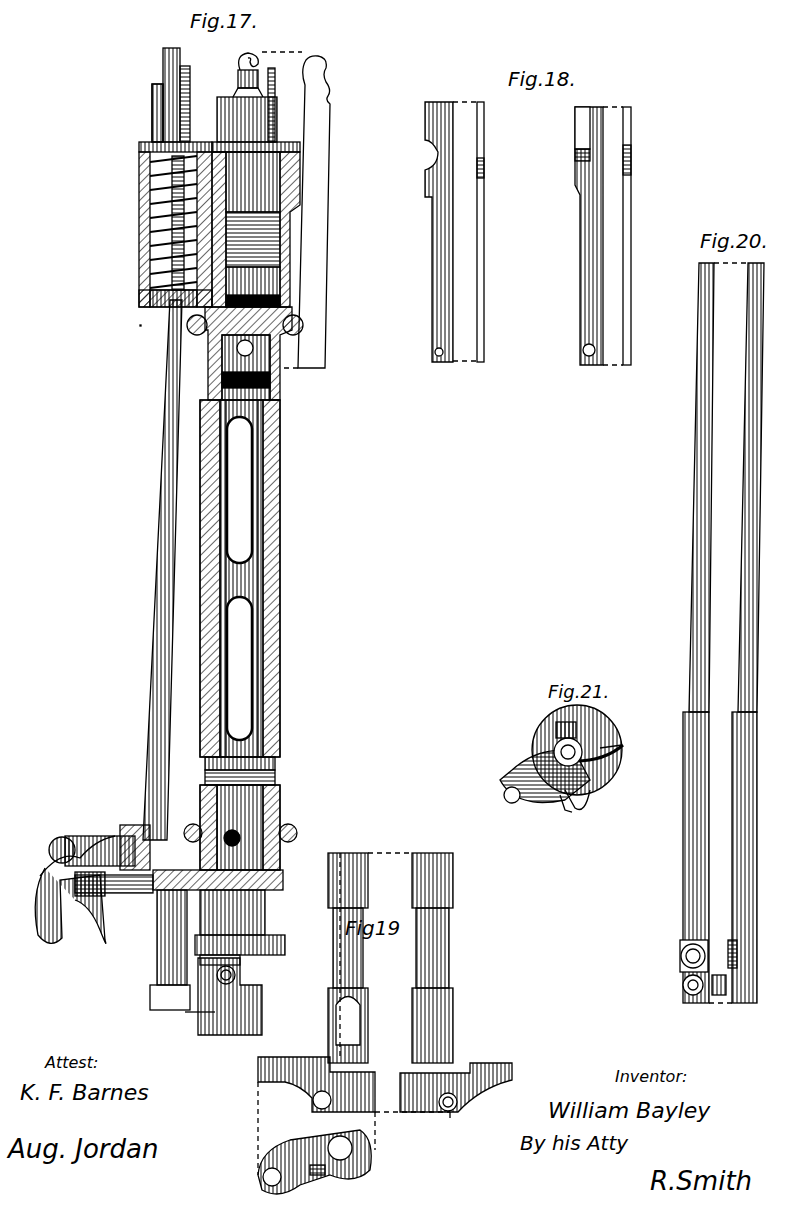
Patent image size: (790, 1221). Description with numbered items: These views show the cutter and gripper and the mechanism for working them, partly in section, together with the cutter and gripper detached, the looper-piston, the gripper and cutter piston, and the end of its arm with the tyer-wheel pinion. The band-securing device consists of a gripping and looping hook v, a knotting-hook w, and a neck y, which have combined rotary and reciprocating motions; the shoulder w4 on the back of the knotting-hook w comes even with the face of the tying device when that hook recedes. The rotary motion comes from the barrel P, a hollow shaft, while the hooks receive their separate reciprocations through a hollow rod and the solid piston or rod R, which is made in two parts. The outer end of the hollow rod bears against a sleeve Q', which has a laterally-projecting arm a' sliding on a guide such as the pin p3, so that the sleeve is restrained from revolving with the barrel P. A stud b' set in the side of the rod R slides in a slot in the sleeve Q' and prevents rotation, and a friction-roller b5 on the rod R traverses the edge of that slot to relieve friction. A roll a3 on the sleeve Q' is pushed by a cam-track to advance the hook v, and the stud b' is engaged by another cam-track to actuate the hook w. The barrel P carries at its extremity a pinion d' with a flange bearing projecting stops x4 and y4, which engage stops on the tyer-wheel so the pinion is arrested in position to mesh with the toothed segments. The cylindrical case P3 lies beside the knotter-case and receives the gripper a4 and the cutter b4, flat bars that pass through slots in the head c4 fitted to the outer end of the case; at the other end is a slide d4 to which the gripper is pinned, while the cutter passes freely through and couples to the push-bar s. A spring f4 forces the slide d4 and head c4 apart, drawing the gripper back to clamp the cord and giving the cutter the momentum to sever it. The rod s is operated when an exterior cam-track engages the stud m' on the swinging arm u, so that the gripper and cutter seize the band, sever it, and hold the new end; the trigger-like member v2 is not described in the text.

In FIG. 17, the cord-gripper a4 is at (170, 62).
In FIG. 18, the cord-gripper a4 is at (442, 232).
In FIG. 17, the cutter b4 is at (187, 80).
In FIG. 18, the cutter b4 is at (618, 236).
In FIG. 17, the head c4 is at (150, 130).
In FIG. 17, the cylindrical case P3 is at (139, 180).
In FIG. 17, the spring f4 is at (139, 222).
In FIG. 17, the slide d4 is at (139, 262).
In FIG. 17, the neck y is at (247, 105).
In FIG. 17, the knotting-hook w is at (280, 53).
In FIG. 17, the gripping and looping hook v is at (279, 105).
In FIG. 17, the shoulder w4 is at (320, 212).
In FIG. 17, the barrel P is at (276, 700).
In FIG. 17, the rod s is at (160, 586).
In FIG. 17, the sleeve Q' is at (250, 896).
In FIG. 19, the sleeve Q' is at (390, 993).
In FIG. 21, the sleeve Q' is at (588, 750).
In FIG. 17, the pinion d' is at (224, 902).
In FIG. 17, the pin p3 is at (175, 952).
In FIG. 17, the swinging arm u is at (240, 955).
In FIG. 17, the stud b' is at (246, 969).
In FIG. 20, the stud b' is at (675, 985).
In FIG. 21, the stud b' is at (546, 725).
In FIG. 17, the laterally-projecting arm a' is at (200, 1003).
In FIG. 19, the laterally-projecting arm a' is at (385, 1122).
In FIG. 21, the laterally-projecting arm a' is at (544, 770).
In FIG. 17, the stud m' is at (101, 870).
In FIG. 17, the trigger v2 is at (73, 889).
In FIG. 19, the roller-stud a3 is at (388, 1156).
In FIG. 21, the roller-stud a3 is at (592, 788).
In FIG. 20, the solid piston or rod R is at (723, 633).
In FIG. 20, the friction-roller b5 is at (681, 957).
In FIG. 21, the projecting stop x4 is at (623, 751).
In FIG. 21, the projecting stop y4 is at (571, 812).